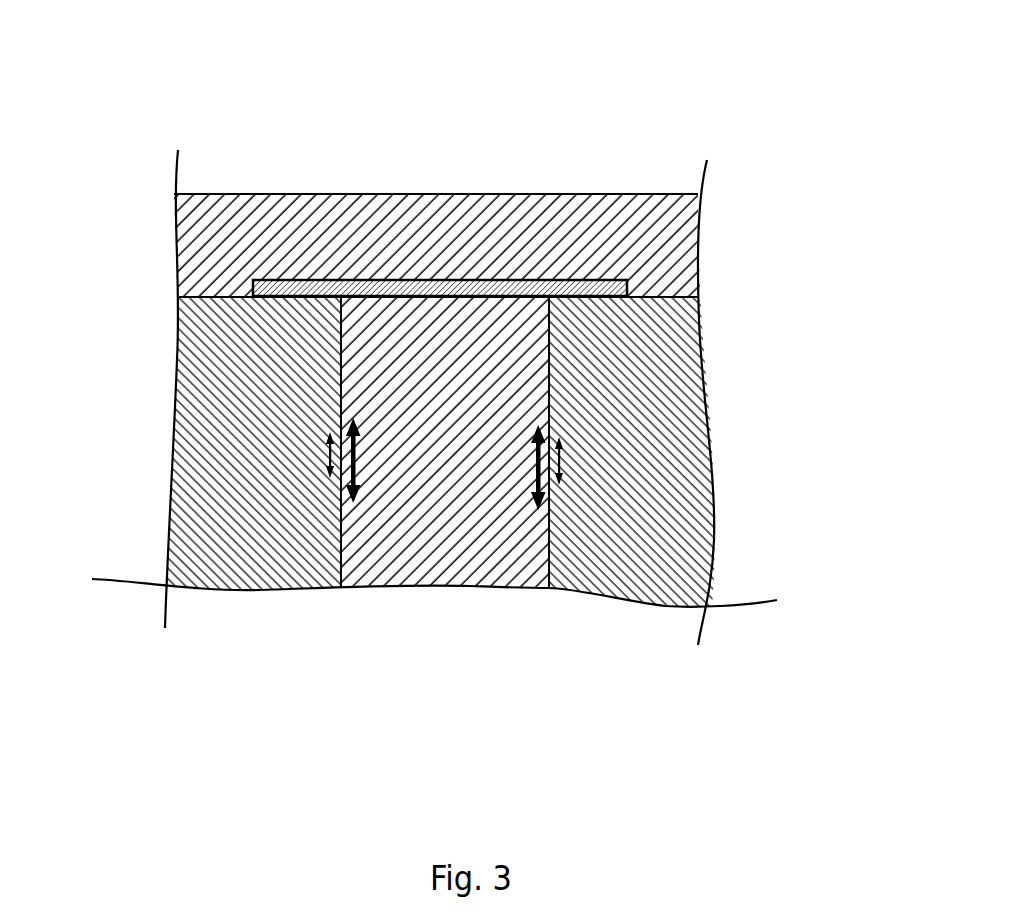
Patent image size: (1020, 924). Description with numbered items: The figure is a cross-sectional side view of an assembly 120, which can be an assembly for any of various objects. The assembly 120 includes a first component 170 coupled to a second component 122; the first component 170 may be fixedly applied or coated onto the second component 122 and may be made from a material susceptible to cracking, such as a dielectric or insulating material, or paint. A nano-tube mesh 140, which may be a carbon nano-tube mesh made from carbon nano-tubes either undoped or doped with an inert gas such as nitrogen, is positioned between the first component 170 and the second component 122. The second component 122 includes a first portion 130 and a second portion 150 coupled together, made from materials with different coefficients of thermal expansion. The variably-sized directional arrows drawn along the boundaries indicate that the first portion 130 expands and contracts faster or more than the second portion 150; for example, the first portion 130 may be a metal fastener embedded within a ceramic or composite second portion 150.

The assembly 120 is at (603, 96).
The second component 122 is at (156, 427).
The first portion 130 is at (341, 533).
The nano-tube mesh 140 is at (605, 280).
The second portion 150 is at (685, 395).
The first component 170 is at (195, 223).